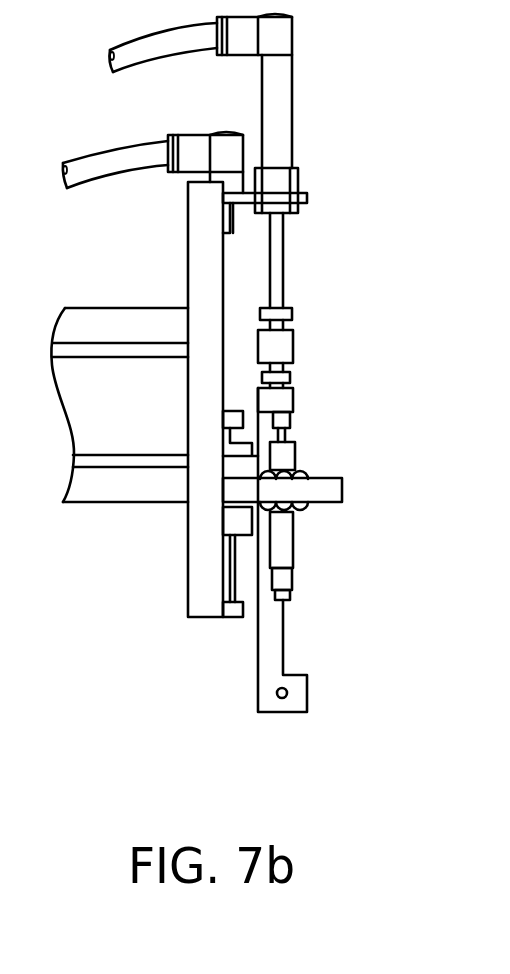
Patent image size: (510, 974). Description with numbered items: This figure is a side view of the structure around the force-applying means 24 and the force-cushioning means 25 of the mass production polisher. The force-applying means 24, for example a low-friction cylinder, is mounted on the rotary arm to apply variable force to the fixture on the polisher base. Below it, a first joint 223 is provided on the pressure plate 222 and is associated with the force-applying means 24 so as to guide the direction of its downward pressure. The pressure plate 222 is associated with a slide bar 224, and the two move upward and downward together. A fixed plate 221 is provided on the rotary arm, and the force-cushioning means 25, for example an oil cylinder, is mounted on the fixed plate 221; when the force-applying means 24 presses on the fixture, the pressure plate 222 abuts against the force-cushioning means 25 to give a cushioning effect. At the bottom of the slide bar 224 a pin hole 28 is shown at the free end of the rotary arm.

The force-applying means 24 is at (298, 182).
The first joint 223 is at (293, 343).
The pressure plate 222 is at (293, 400).
The force-cushioning means 25 is at (295, 457).
The fixed plate 221 is at (323, 493).
The slide bar 224 is at (272, 617).
The pin hole 28 is at (292, 693).